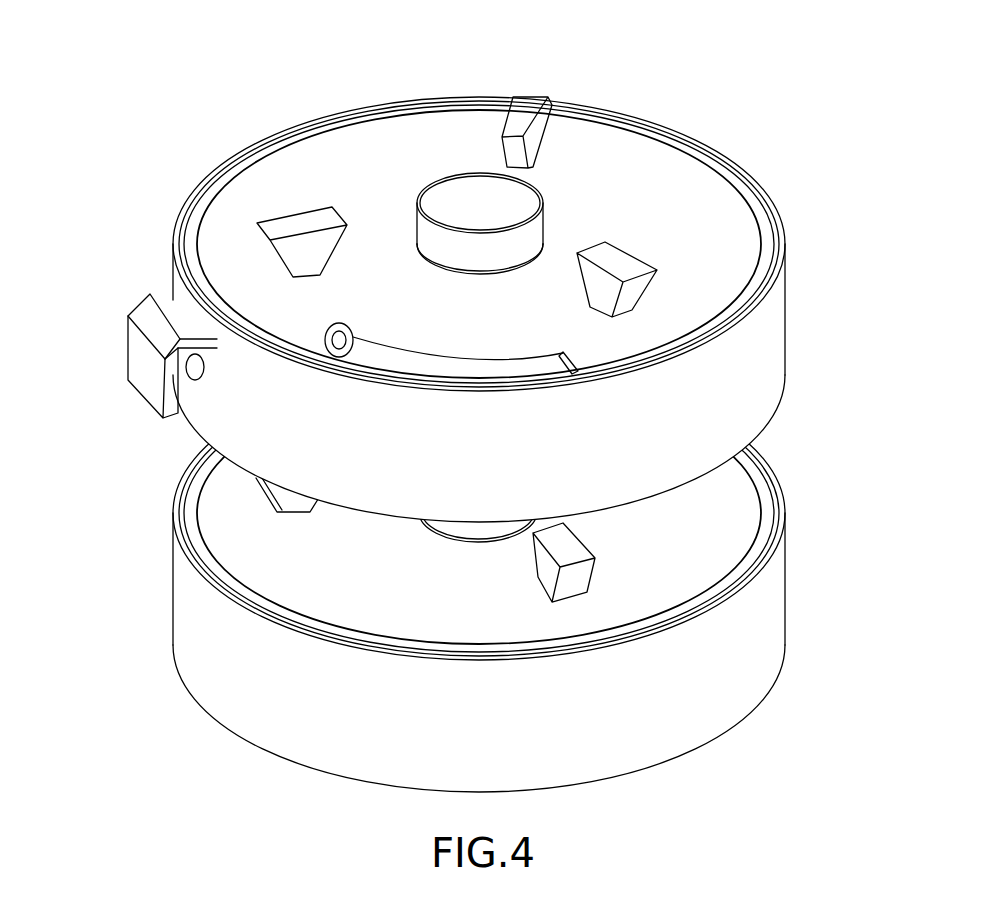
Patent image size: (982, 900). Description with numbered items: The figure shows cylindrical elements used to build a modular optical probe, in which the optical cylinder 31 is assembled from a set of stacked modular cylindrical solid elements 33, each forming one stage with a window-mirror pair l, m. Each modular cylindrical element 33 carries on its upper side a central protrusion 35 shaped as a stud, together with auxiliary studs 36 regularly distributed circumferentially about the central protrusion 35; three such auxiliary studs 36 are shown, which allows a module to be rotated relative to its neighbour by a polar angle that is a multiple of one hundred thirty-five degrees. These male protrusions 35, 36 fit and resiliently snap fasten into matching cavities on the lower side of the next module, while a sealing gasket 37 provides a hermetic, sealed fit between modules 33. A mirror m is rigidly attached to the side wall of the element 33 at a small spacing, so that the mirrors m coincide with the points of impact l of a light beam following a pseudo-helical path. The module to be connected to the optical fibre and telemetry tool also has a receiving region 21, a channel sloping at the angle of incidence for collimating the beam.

The optical cylinder 31 is at (461, 413).
The modular cylindrical element 33 is at (772, 318).
The central protrusion 35 is at (462, 190).
The auxiliary studs 36 is at (302, 220).
The sealing gasket 37 is at (767, 217).
The receiving region 21 is at (320, 338).
The mirror m is at (145, 356).
The point of impact l is at (197, 382).